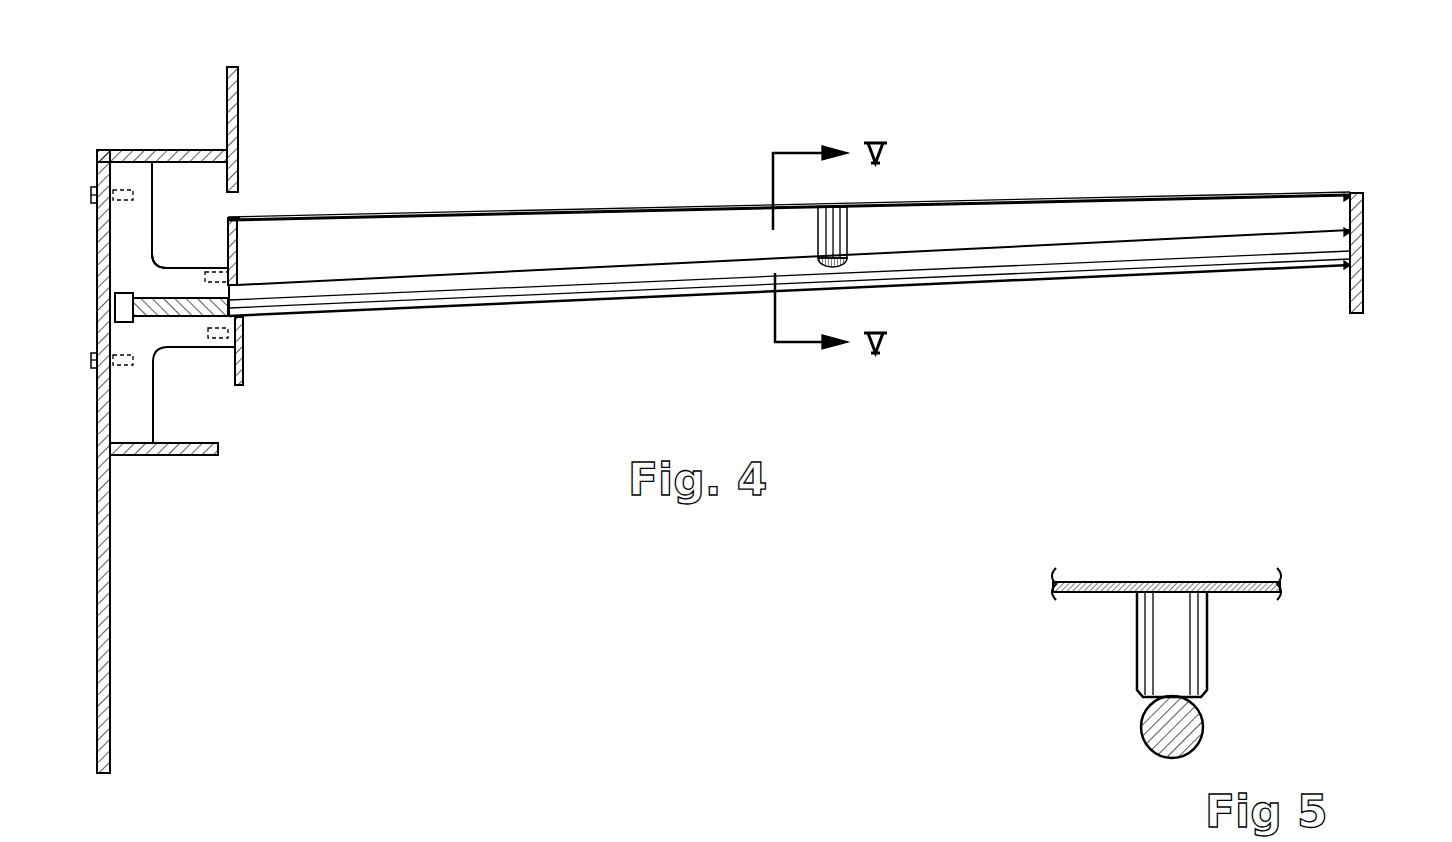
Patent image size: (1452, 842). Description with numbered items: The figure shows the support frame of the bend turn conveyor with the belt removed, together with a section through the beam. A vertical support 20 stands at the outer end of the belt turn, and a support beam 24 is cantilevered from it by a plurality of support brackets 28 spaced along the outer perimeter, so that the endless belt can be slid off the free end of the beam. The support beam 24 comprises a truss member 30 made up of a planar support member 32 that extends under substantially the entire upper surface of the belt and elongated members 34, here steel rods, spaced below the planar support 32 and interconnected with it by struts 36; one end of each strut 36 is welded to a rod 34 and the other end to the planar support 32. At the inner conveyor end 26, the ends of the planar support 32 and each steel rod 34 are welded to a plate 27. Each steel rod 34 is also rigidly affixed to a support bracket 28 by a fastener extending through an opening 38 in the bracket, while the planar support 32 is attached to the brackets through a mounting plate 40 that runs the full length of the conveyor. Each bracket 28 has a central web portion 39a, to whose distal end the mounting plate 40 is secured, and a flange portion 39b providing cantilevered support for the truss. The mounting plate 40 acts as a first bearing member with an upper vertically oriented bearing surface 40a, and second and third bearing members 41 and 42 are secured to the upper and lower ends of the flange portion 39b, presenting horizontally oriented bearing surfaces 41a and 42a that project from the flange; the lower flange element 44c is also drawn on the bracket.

In FIG. 4, the vertical support 20 is at (112, 638).
In FIG. 4, the support beam 24 is at (418, 200).
In FIG. 4, the inner conveyor end 26 is at (1363, 233).
In FIG. 4, the plate 27 is at (1362, 205).
In FIG. 4, the support bracket 28 is at (129, 224).
In FIG. 4, the truss member 30 is at (1009, 190).
In FIG. 4, the planar support member 32 is at (1097, 202).
In FIG. 5, the planar support member 32 is at (1117, 593).
In FIG. 4, the elongated member 34 is at (1117, 268).
In FIG. 5, the elongated member 34 is at (1138, 723).
In FIG. 4, the strut 36 is at (847, 223).
In FIG. 5, the strut 36 is at (1207, 648).
In FIG. 4, the opening 38 is at (160, 305).
In FIG. 4, the central web portion 39a is at (168, 273).
In FIG. 4, the flange portion 39b is at (133, 413).
In FIG. 4, the mounting plate 40 is at (237, 262).
In FIG. 4, the upper bearing surface 40a is at (230, 236).
In FIG. 4, the second bearing member 41 is at (148, 150).
In FIG. 4, the upper horizontal bearing surface 41a is at (197, 170).
In FIG. 4, the third bearing member 42 is at (178, 455).
In FIG. 4, the lower horizontal bearing surface 42a is at (195, 443).
In FIG. 4, the lower flange 44c is at (243, 355).